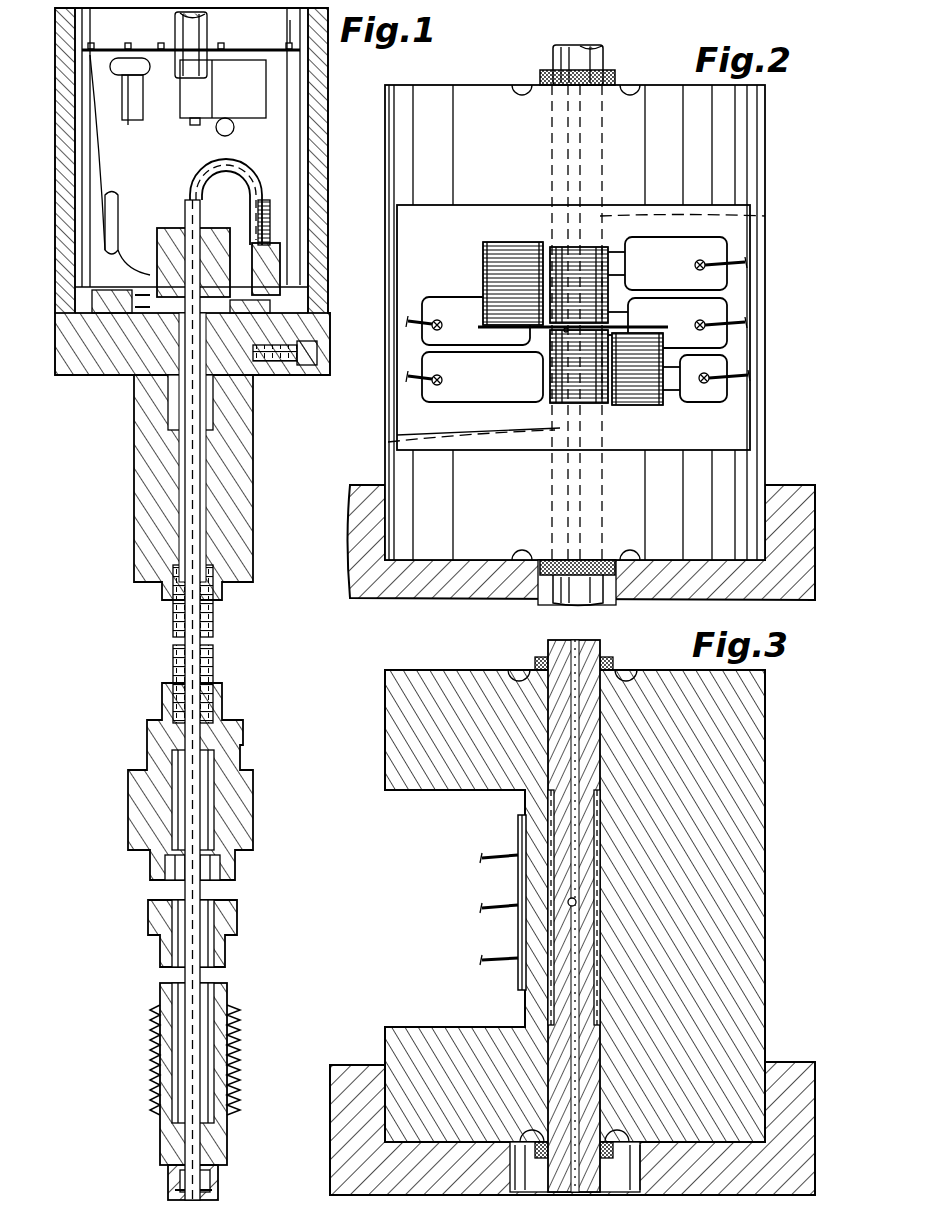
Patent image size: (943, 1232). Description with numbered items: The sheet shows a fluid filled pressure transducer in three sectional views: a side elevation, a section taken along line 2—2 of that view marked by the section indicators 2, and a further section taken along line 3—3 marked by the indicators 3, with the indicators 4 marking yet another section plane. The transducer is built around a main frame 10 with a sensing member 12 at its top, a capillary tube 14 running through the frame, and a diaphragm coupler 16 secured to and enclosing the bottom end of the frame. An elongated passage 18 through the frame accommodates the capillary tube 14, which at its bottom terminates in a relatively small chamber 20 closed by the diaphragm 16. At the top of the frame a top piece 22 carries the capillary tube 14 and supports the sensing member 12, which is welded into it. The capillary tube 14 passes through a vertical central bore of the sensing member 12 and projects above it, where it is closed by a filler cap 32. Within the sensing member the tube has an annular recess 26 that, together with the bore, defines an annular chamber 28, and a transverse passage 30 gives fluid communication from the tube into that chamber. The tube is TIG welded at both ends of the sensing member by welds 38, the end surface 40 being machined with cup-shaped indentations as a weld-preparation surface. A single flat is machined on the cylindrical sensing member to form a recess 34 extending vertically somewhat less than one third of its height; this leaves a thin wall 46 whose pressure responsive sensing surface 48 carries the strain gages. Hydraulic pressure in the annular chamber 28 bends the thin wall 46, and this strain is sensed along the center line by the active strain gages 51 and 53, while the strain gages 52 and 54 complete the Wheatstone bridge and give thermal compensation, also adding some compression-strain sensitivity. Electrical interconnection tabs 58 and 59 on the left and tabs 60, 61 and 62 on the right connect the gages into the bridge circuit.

In FIG. 1, the section line 2- 2 is at (153, 188).
In FIG. 2, the section line 3- 3 is at (575, 135).
In FIG. 2, the section line 4- 4 is at (395, 325).
In FIG. 1, the main frame 10 is at (132, 815).
In FIG. 1, the sensing member 12 is at (178, 226).
In FIG. 2, the sensing member 12 is at (768, 165).
In FIG. 3, the sensing member 12 is at (768, 916).
In FIG. 1, the capillary tube 14 is at (203, 499).
In FIG. 2, the capillary tube 14 is at (605, 60).
In FIG. 3, the capillary tube 14 is at (604, 661).
In FIG. 1, the diaphragm coupler 16 is at (178, 1200).
In FIG. 1, the elongated passage 18 is at (207, 822).
In FIG. 1, the chamber 20 is at (205, 1183).
In FIG. 1, the top piece 22 is at (262, 375).
In FIG. 2, the top piece 22 is at (368, 598).
In FIG. 3, the top piece 22 is at (364, 1065).
In FIG. 2, the annular recess 26 is at (703, 219).
In FIG. 3, the annular recess 26 is at (600, 820).
In FIG. 2, the annular chamber 28 is at (395, 447).
In FIG. 3, the annular chamber 28 is at (600, 840).
In FIG. 2, the transverse passage 30 is at (562, 328).
In FIG. 3, the transverse passage 30 is at (568, 902).
In FIG. 1, the filler cap 32 is at (283, 250).
In FIG. 2, the recess 34 is at (735, 445).
In FIG. 3, the recess 34 is at (506, 934).
In FIG. 3, the welds 38 is at (542, 662).
In FIG. 3, the surface 40 is at (425, 672).
In FIG. 3, the thin wall 46 is at (530, 1005).
In FIG. 2, the pressure responsive sensing surface 48 is at (400, 433).
In FIG. 3, the pressure responsive sensing surface 48 is at (540, 993).
In FIG. 2, the active strain gage 51 is at (575, 262).
In FIG. 3, the active strain gage 51 is at (518, 828).
In FIG. 2, the inactive strain gage 52 is at (487, 255).
In FIG. 2, the active strain gage 53 is at (565, 388).
In FIG. 2, the inactive strain gage 54 is at (638, 400).
In FIG. 3, the inactive strain gage 54 is at (518, 925).
In FIG. 2, the electrical interconnection tab 58 is at (437, 300).
In FIG. 2, the electrical interconnection tab 59 is at (430, 396).
In FIG. 2, the electrical interconnection tab 60 is at (720, 252).
In FIG. 3, the electrical interconnection tab 60 is at (520, 822).
In FIG. 2, the electrical interconnection tab 61 is at (720, 310).
In FIG. 3, the electrical interconnection tab 61 is at (520, 905).
In FIG. 2, the electrical interconnection tab 62 is at (720, 392).
In FIG. 3, the electrical interconnection tab 62 is at (522, 975).